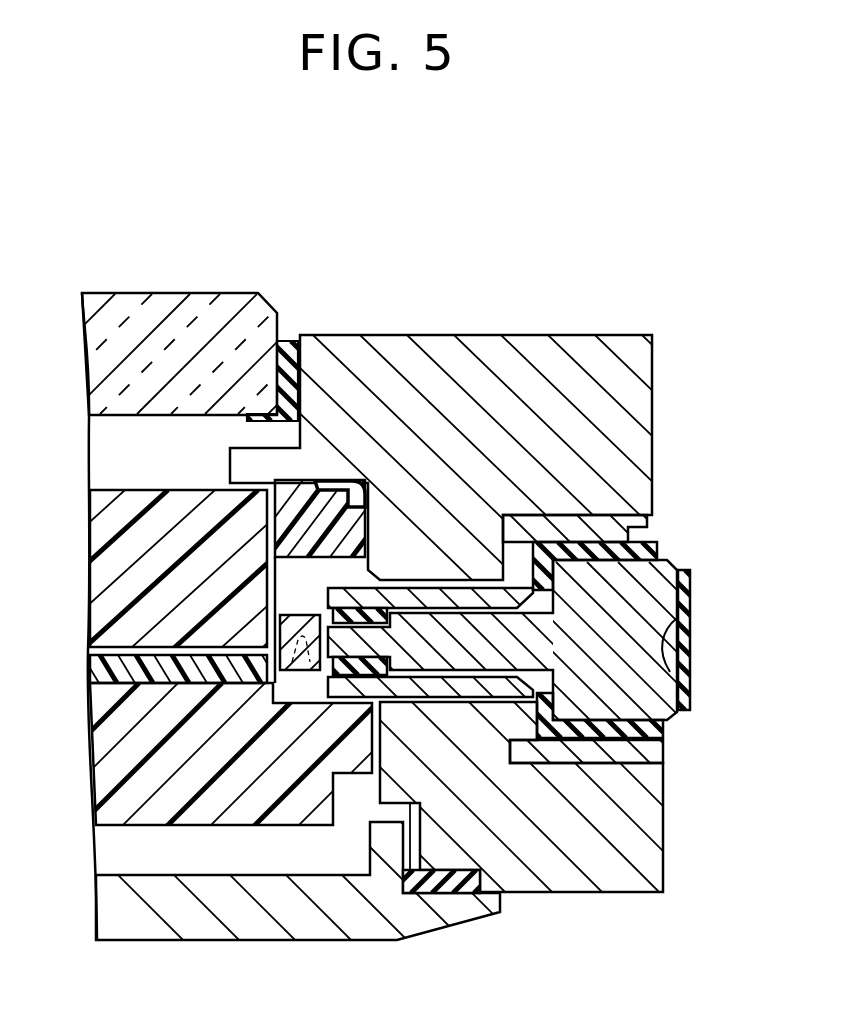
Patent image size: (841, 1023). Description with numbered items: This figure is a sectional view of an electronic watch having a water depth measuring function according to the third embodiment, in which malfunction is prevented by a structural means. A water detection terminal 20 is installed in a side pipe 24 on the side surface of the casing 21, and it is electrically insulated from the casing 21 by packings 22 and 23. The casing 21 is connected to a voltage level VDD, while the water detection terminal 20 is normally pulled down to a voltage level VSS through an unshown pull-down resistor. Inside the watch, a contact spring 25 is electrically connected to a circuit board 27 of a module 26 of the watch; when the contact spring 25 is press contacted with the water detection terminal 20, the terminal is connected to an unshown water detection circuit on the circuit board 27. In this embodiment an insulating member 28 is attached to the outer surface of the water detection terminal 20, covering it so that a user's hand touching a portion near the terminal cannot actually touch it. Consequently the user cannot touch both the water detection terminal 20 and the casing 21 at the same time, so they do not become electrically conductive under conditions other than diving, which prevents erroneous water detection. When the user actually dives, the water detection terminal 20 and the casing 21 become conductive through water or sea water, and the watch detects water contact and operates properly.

The water detection terminal 20 is at (643, 690).
The casing 21 is at (567, 362).
The packing 22 is at (640, 550).
The packing 23 is at (372, 667).
The side pipe 24 is at (627, 532).
The contact spring 25 is at (280, 717).
The module 26 is at (143, 793).
The circuit board 27 is at (110, 663).
The insulating member 28 is at (685, 613).